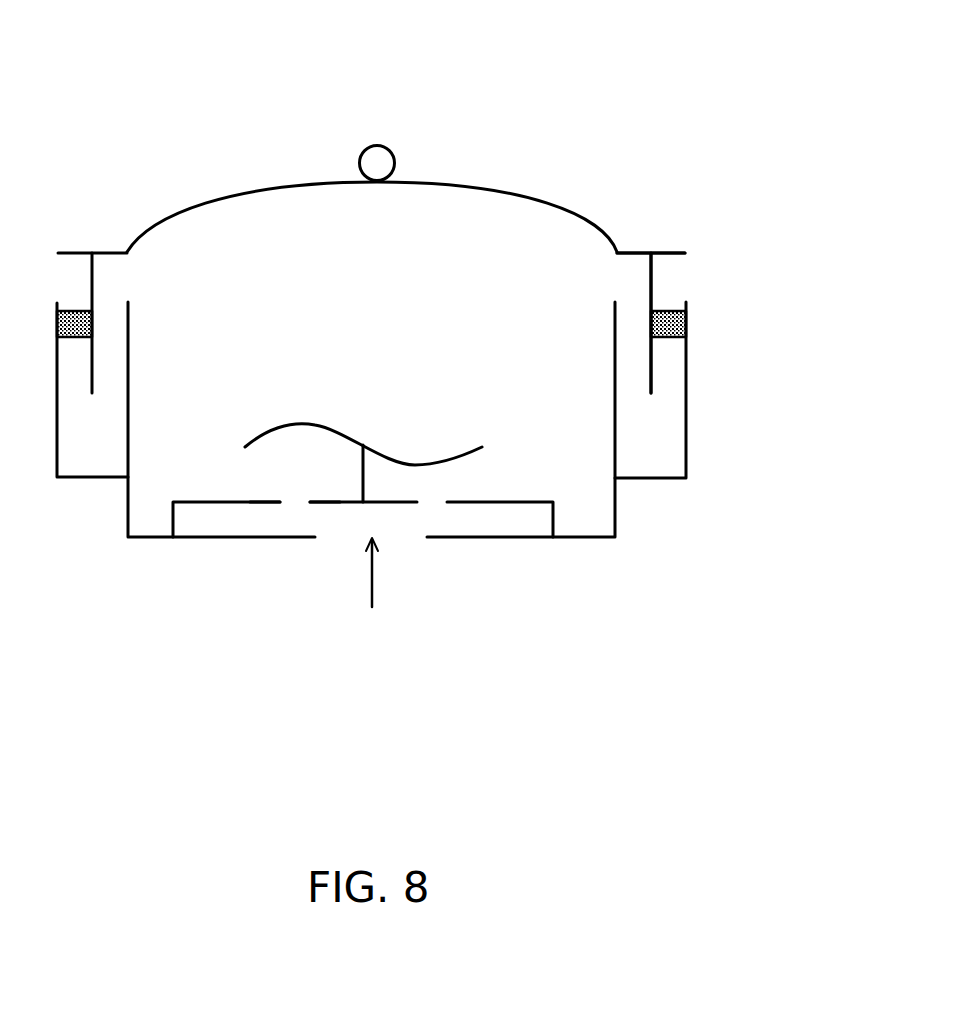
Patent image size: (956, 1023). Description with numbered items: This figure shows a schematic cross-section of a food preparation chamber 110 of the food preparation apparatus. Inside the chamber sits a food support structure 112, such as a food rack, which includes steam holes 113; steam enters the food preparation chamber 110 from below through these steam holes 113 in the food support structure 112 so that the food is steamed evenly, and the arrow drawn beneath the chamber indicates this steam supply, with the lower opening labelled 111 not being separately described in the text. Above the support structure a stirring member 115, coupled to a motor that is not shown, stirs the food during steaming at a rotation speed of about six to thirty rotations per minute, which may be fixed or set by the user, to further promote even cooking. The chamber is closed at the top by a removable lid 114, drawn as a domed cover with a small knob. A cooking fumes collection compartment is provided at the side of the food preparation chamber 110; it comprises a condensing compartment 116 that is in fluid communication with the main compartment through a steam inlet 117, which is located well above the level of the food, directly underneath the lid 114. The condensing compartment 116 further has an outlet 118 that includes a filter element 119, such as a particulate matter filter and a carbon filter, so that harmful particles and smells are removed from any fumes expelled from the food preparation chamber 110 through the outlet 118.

The food preparation chamber 110 is at (395, 739).
The gas inlet 111 is at (405, 540).
The food support structure 112 is at (555, 520).
The steam holes 113 is at (297, 503).
The lid 114 is at (380, 148).
The stirring member 115 is at (340, 430).
The condensing compartment 116 is at (670, 452).
The steam inlet 117 is at (615, 277).
The outlet 118 is at (668, 270).
The filter element 119 is at (685, 322).